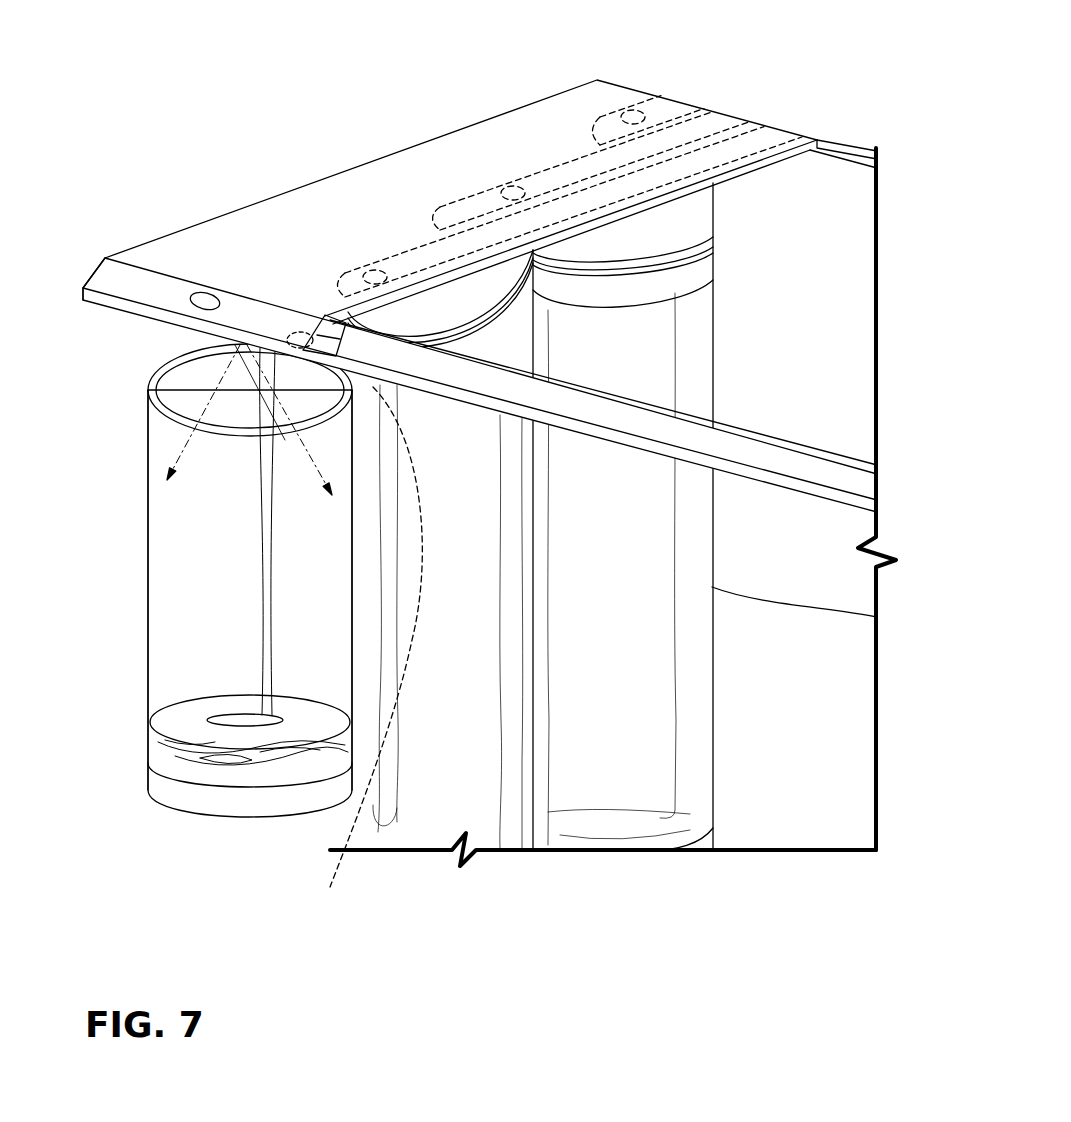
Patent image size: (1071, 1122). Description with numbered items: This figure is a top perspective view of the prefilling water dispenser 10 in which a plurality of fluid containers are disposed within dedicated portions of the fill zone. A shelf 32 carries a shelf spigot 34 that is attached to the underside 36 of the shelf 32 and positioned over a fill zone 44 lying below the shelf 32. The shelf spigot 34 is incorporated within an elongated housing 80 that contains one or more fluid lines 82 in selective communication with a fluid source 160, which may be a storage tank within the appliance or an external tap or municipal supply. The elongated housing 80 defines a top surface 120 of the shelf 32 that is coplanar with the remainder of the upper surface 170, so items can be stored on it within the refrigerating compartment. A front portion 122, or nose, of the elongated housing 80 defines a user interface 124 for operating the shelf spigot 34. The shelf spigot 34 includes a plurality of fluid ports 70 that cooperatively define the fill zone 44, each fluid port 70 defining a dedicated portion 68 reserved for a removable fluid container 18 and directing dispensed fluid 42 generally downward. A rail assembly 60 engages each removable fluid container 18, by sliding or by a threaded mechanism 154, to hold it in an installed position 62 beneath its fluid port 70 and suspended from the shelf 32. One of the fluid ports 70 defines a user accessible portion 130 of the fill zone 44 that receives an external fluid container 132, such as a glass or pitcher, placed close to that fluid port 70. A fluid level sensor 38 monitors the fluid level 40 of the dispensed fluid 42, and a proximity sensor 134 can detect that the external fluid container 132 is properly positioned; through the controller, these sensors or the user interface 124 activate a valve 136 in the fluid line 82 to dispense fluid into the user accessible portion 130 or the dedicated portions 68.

The prefilling water dispenser 10 is at (362, 142).
The removable fluid container 18 is at (877, 617).
The shelf 32 is at (808, 467).
The shelf spigot 34 is at (81, 296).
The underside 36 is at (127, 313).
The fluid level sensor 38 is at (152, 396).
The fluid level 40 is at (235, 748).
The dispensed fluid 42 is at (213, 763).
The fill zone 44 is at (600, 851).
The rail assembly 60 is at (722, 190).
The installed position 62 is at (727, 312).
The dedicated portion 68 is at (407, 853).
The fluid port 70 is at (296, 330).
The elongated housing 80 is at (347, 168).
The fluid line 82 is at (782, 135).
The top surface 120 is at (362, 217).
The front portion 122 is at (113, 277).
The user interface 124 is at (207, 293).
The user accessible portion 130 is at (165, 420).
The external fluid container 132 is at (188, 633).
The proximity sensor 134 is at (330, 887).
The valve 136 is at (362, 276).
The threaded mechanism 154 is at (724, 244).
The fluid source 160 is at (823, 20).
The upper surface 170 is at (808, 394).